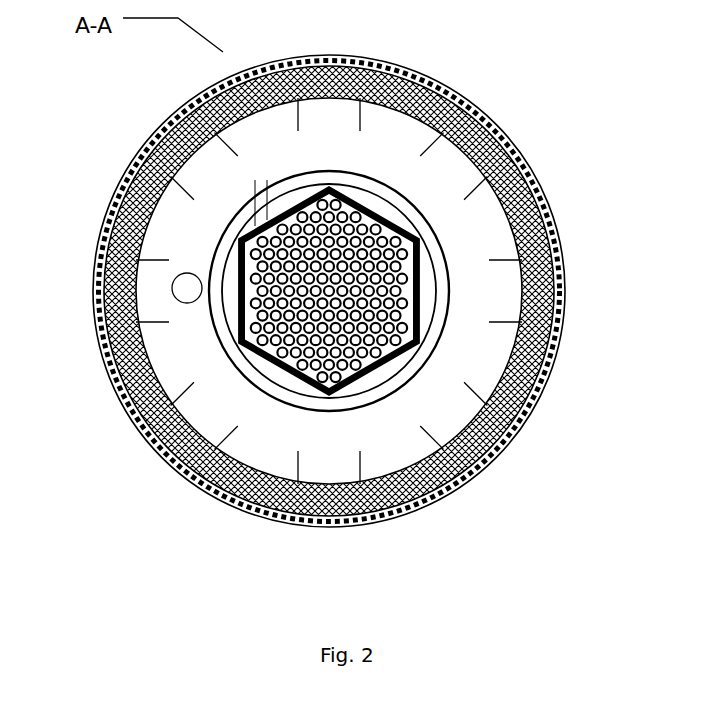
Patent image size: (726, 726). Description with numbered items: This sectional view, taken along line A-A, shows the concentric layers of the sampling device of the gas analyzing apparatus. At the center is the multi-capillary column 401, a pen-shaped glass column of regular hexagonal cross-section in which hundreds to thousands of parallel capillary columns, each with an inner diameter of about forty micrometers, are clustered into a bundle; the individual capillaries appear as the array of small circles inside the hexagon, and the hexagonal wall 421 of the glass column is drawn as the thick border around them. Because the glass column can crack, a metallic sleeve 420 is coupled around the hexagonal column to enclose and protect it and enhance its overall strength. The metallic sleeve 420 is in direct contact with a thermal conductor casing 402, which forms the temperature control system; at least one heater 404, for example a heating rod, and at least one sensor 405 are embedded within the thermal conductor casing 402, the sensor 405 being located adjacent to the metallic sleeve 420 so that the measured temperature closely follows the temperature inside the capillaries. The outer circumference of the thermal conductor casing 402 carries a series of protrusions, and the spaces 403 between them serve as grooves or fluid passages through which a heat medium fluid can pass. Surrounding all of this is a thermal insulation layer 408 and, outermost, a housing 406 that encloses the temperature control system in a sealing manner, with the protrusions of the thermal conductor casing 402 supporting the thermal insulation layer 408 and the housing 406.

The multi-capillary column 401 is at (600, 122).
The thermal conductor casing 402 is at (215, 177).
The spaces 403 is at (168, 363).
The heater 404 is at (188, 287).
The sensor 405 is at (449, 296).
The housing 406 is at (197, 99).
The thermal insulation layer 408 is at (130, 408).
The metallic sleeve 420 is at (422, 217).
The hexagonal fiber tube 421 is at (367, 203).